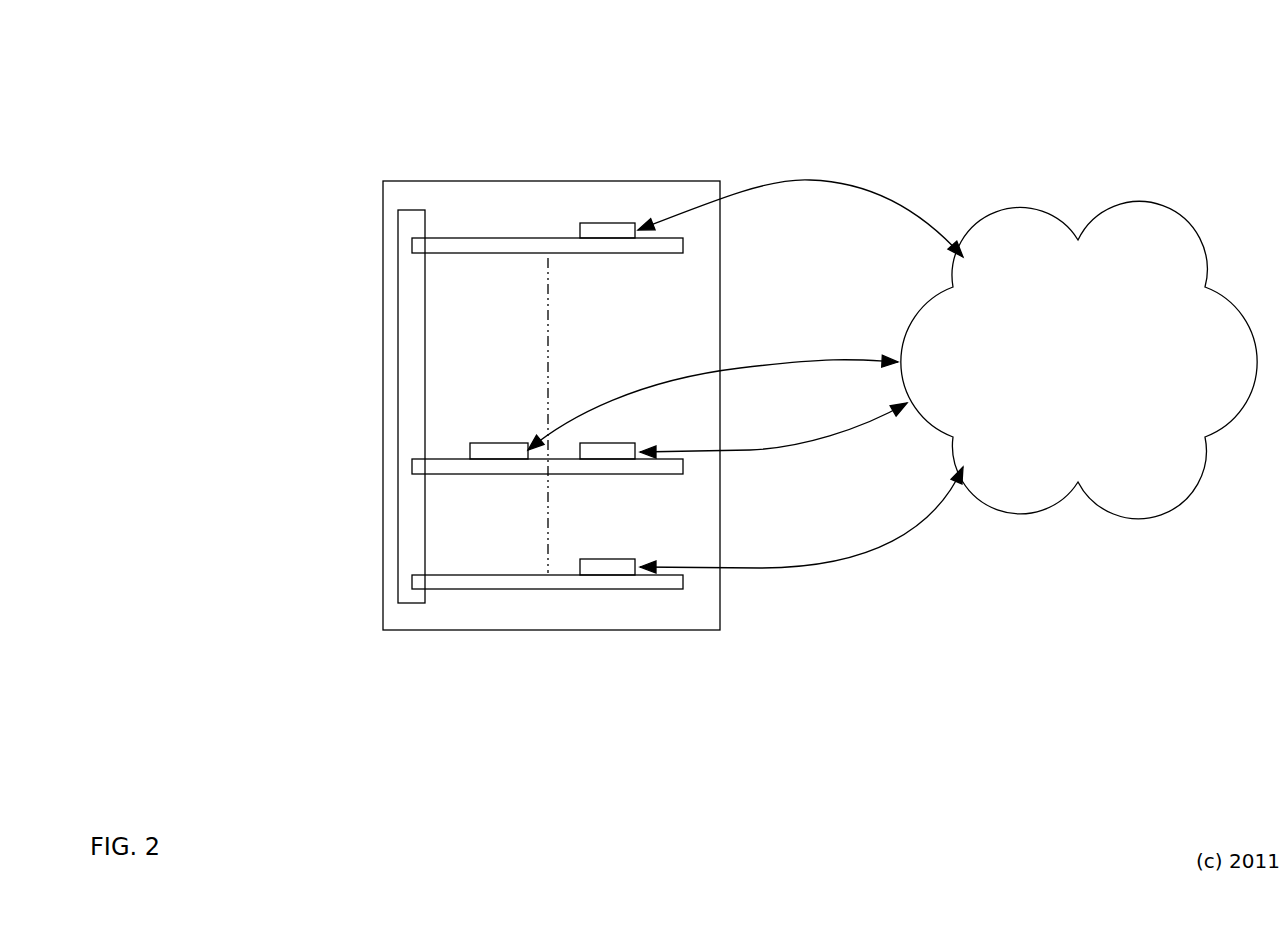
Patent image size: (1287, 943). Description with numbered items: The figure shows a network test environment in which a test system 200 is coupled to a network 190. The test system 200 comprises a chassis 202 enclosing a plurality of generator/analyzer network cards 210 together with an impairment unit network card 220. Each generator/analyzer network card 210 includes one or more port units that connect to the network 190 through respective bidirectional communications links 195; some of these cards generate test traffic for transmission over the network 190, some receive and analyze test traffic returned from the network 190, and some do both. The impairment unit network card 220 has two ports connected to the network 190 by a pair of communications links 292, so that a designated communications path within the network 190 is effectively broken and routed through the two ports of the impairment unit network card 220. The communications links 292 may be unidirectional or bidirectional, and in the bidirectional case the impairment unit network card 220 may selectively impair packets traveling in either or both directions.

The test system 200 is at (450, 92).
The chassis 202 is at (613, 181).
The generator/analyzer network card 210 is at (457, 238).
The impairment unit network card 220 is at (457, 459).
The network 190 is at (1079, 359).
The bidirectional communications link 195 is at (857, 185).
The communications link 292 is at (788, 445).